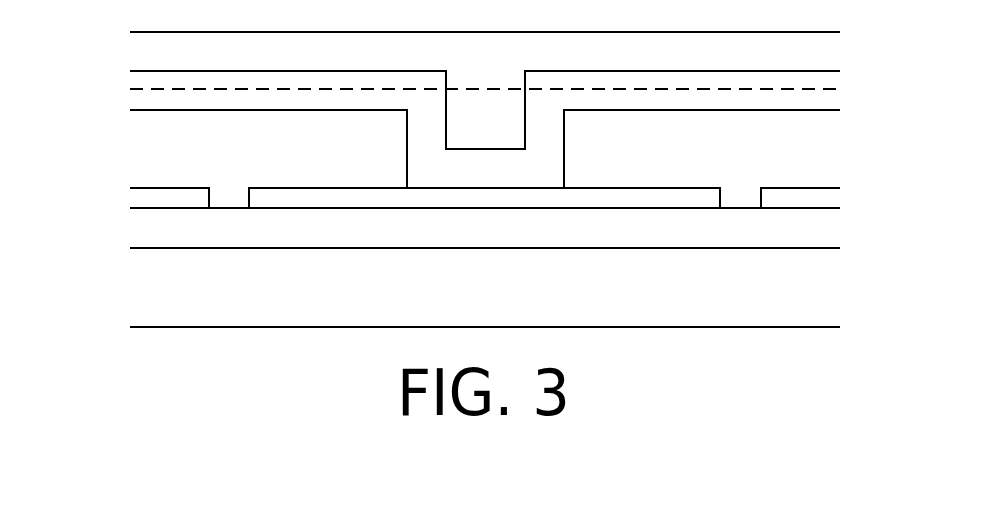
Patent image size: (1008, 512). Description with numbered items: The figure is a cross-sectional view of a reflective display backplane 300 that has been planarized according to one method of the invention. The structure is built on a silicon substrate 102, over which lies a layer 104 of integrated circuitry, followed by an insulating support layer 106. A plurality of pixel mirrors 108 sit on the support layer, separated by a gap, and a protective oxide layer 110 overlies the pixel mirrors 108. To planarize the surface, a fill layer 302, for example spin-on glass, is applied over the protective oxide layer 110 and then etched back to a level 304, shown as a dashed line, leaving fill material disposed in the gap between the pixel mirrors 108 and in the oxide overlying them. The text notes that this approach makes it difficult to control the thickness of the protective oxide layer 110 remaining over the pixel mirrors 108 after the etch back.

The fill layer 302 is at (830, 53).
The level 304 is at (137, 89).
The protective oxide layer 110 is at (830, 101).
The pixel mirrors 108 is at (150, 142).
The insulating support layer 106 is at (830, 200).
The layer of integrated circuitry 104 is at (830, 237).
The silicon substrate 102 is at (830, 288).
The reflective display backplane 300 is at (773, 375).